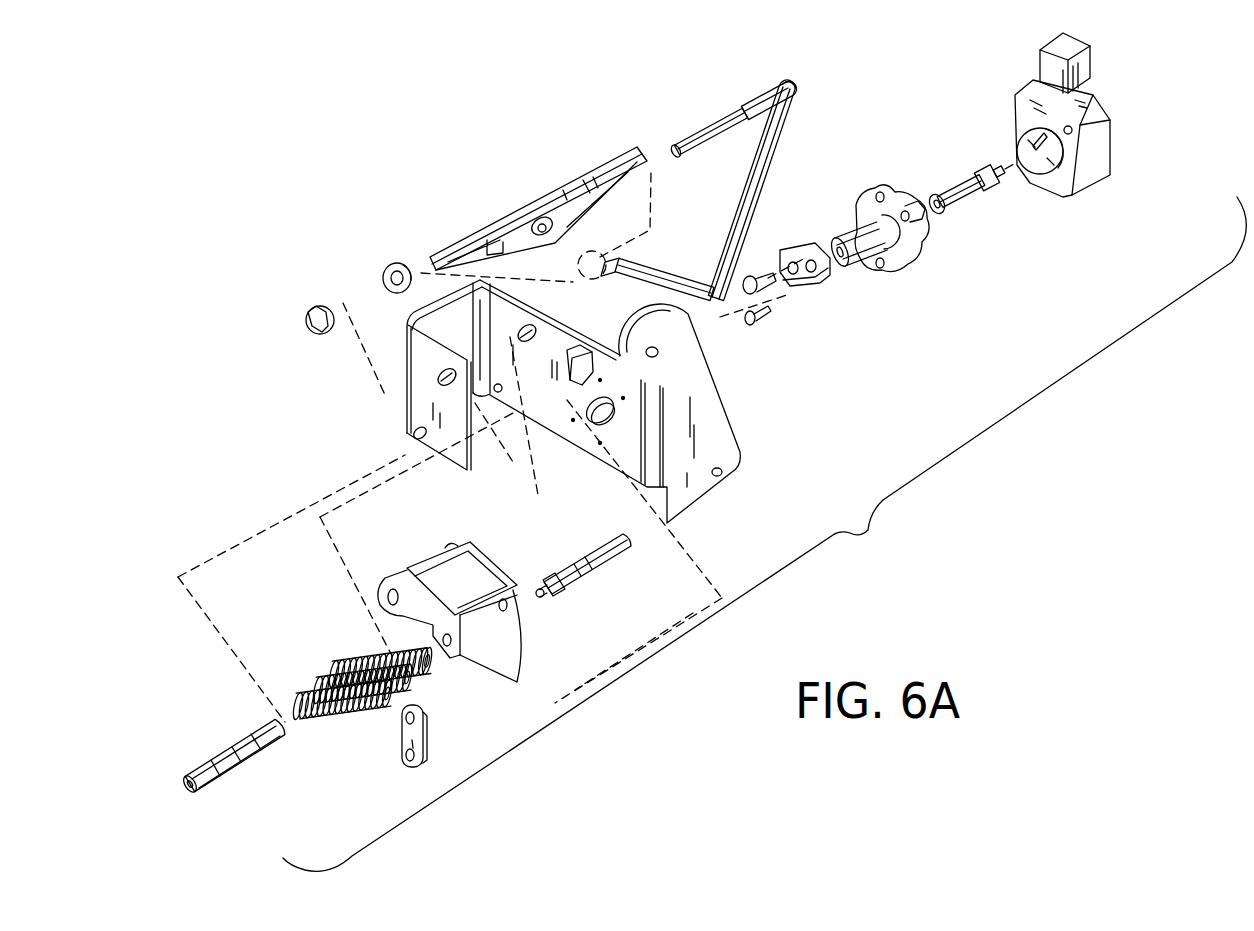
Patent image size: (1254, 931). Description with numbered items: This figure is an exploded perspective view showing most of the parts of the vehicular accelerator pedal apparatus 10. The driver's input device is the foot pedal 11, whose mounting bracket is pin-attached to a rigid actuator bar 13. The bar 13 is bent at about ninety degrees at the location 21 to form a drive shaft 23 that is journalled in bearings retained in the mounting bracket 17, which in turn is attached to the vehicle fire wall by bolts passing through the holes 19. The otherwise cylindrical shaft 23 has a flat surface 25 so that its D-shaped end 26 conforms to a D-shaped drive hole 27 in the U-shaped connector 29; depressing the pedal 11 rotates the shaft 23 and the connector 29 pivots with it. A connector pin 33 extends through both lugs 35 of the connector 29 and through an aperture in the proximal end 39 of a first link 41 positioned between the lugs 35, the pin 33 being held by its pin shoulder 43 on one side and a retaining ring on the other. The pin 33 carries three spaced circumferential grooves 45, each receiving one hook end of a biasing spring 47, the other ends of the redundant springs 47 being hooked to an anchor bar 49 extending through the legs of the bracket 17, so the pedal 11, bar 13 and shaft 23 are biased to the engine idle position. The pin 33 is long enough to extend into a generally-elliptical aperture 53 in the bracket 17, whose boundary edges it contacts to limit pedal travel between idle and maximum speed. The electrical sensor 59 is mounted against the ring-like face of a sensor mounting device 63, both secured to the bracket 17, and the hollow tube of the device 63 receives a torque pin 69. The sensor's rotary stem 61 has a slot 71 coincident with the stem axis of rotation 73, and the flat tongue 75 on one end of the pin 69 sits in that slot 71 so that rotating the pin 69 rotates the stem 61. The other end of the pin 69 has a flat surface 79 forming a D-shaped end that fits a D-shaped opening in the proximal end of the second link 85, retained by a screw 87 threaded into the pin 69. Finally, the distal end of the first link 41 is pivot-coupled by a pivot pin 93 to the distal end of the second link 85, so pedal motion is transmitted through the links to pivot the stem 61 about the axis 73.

The vehicular accelerator pedal apparatus 10 is at (867, 535).
The foot pedal 11 is at (520, 202).
The actuator bar 13 is at (767, 163).
The mounting bracket 17 is at (425, 383).
The holes 19 is at (656, 353).
The bend location 21 is at (793, 82).
The drive shaft 23 is at (731, 112).
The flat surface 25 is at (677, 143).
The D-shaped end 26 is at (677, 152).
The D-shaped drive hole 27 is at (390, 590).
The U-shaped connector 29 is at (455, 563).
The connector pin 33 is at (617, 557).
The lugs 35 is at (513, 612).
The proximal end of first link 39 is at (418, 712).
The first link 41 is at (400, 738).
The pin shoulder 43 is at (540, 590).
The circumferential grooves 45 is at (583, 577).
The biasing springs 47 is at (377, 665).
The anchor bar 49 is at (207, 790).
The generally-elliptical aperture 53 is at (572, 356).
The electrical sensor 59 is at (1110, 137).
The rotary stem 61 is at (1053, 178).
The sensor mounting device 63 is at (897, 265).
The torque pin 69 is at (945, 185).
The slot 71 is at (1037, 143).
The stem axis of rotation 73 is at (1113, 107).
The flat tongue 75 is at (1003, 163).
The flat surface 79 is at (933, 200).
The second link 85 is at (803, 287).
The screw 87 is at (763, 320).
The pivot pin 93 is at (750, 276).